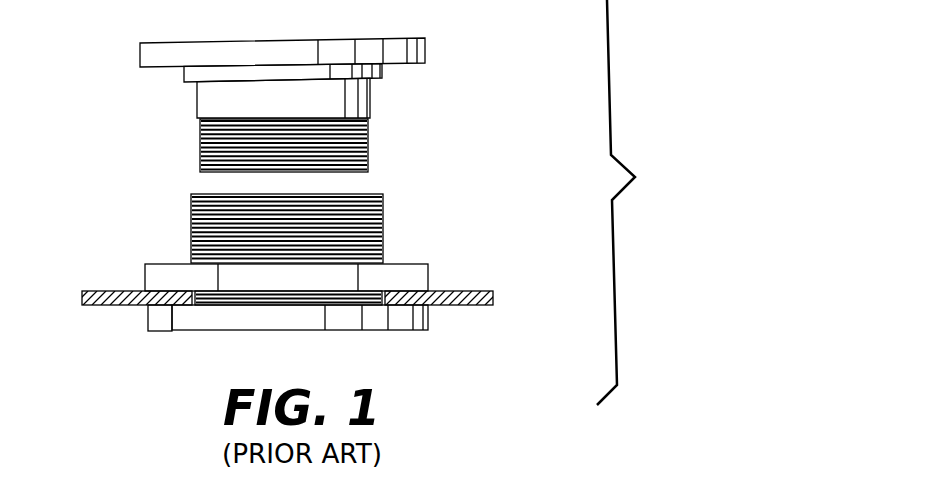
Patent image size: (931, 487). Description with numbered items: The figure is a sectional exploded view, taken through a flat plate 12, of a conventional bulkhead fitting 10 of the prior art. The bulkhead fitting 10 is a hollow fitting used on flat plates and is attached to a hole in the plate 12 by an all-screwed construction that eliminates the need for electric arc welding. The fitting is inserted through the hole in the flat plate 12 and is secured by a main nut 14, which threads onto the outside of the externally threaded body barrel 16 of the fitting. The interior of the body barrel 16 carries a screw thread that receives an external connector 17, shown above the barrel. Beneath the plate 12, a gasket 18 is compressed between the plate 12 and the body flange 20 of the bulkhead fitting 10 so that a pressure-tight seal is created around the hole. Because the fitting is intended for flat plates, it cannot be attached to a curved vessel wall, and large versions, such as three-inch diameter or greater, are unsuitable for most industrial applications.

The bulkhead fitting 10 is at (387, 218).
The flat plate 12 is at (113, 306).
The main nut 14 is at (430, 272).
The body barrel 16 is at (383, 193).
The external connector 17 is at (137, 69).
The gasket 18 is at (166, 312).
The body flange 20 is at (384, 331).